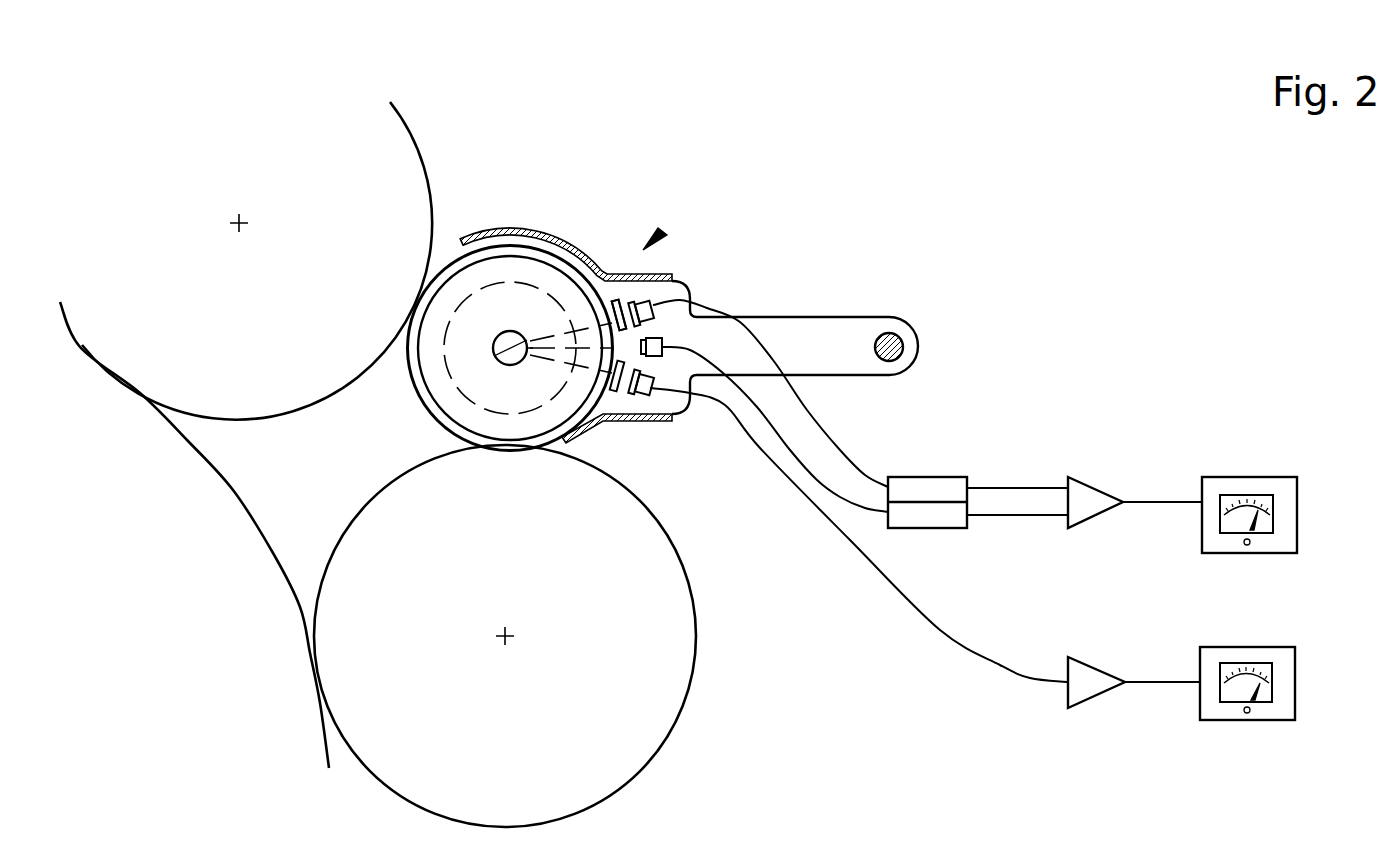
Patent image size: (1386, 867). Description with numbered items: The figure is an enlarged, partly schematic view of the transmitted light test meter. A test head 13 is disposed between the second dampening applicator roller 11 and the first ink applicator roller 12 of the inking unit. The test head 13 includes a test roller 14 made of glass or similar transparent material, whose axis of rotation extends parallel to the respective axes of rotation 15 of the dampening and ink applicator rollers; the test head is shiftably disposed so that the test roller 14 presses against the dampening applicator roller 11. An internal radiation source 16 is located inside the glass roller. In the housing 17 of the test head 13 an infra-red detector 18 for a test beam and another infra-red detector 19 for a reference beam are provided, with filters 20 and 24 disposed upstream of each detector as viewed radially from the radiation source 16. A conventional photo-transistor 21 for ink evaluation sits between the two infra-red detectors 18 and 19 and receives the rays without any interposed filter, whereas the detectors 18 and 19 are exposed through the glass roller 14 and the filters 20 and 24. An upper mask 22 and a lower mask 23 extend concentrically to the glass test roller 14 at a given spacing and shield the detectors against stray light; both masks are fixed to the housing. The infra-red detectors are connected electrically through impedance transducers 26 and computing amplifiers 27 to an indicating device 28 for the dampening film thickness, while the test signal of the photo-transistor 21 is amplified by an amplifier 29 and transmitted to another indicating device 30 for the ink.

The second dampening applicator roller 11 is at (675, 657).
The first ink applicator roller 12 is at (407, 158).
The test head 13 is at (662, 220).
The test roller 14 is at (510, 253).
The axes of rotation 15 is at (240, 217).
The radiation source 16 is at (500, 357).
The housing 17 is at (608, 297).
The infra-red detector 18 is at (638, 305).
The infra-red detector 19 is at (640, 385).
The filter 20 is at (622, 307).
The photo-transistor 21 is at (648, 347).
The upper mask 22 is at (470, 236).
The lower mask 23 is at (579, 437).
The filter 24 is at (620, 388).
The impedance transducer 26 is at (928, 495).
The computing amplifier 27 is at (1088, 497).
The indicating device 28 is at (1253, 483).
The amplifier 29 is at (1090, 683).
The indicating device 30 is at (1241, 716).